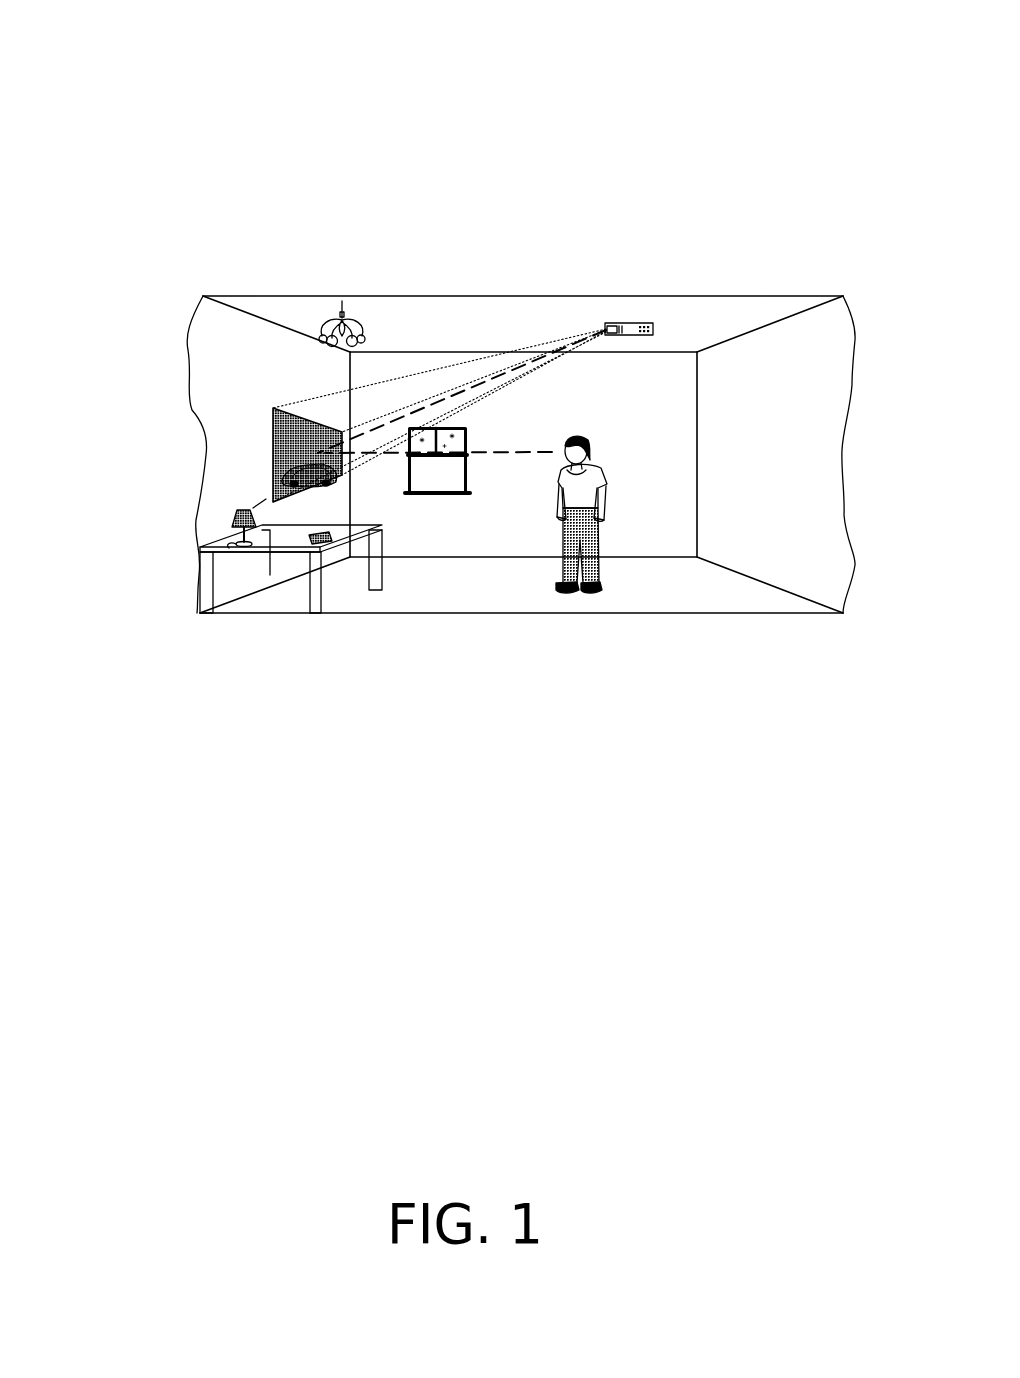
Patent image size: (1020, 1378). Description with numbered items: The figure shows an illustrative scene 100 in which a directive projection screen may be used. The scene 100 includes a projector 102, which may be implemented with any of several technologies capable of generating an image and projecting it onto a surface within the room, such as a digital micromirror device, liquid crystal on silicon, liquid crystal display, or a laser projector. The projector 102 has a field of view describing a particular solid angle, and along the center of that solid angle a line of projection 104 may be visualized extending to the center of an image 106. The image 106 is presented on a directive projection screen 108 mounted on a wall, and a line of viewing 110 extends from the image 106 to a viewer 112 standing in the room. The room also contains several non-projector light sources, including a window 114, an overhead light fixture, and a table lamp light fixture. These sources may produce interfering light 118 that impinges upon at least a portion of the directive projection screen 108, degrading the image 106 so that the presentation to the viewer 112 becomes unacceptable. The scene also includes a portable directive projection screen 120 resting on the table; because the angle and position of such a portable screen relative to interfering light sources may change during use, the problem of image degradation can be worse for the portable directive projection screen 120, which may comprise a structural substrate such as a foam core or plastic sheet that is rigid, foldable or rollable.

The scene 100 is at (751, 52).
The projector 102 is at (608, 323).
The line of projection 104 is at (463, 393).
The image 106 is at (285, 425).
The directive projection screen 108 is at (272, 452).
The line of viewing 110 is at (507, 453).
The viewer 112 is at (595, 523).
The window 114 is at (438, 477).
The interfering light 118 is at (263, 497).
The portable directive projection screen 120 is at (323, 543).